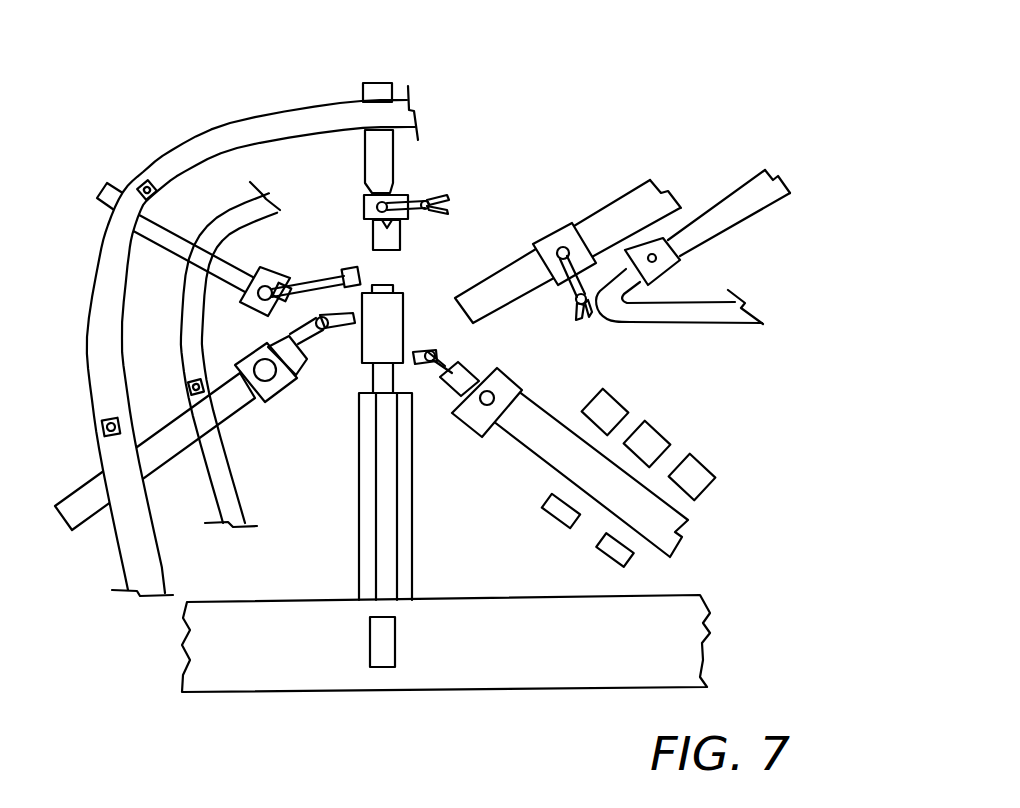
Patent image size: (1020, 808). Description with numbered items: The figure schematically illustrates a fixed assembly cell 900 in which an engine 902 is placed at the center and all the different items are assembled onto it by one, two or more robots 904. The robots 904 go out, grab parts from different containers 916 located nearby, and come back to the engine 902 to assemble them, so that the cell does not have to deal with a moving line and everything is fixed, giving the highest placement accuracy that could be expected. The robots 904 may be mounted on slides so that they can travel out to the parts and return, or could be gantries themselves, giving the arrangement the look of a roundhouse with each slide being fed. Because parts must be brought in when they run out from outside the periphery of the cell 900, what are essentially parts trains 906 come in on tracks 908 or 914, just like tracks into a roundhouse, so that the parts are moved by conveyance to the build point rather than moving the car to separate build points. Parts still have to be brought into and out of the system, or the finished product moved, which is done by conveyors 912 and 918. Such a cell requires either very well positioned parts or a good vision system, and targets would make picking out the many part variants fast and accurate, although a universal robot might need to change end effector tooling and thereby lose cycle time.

The fixed assembly cell 900 is at (587, 104).
The engine 902 is at (407, 307).
The robots 904 is at (273, 270).
The parts trains 906 is at (672, 276).
The tracks 908 is at (753, 193).
The conveyors 912 is at (412, 513).
The tracks 914 is at (150, 563).
The containers 916 is at (620, 400).
The conveyors 918 is at (228, 675).